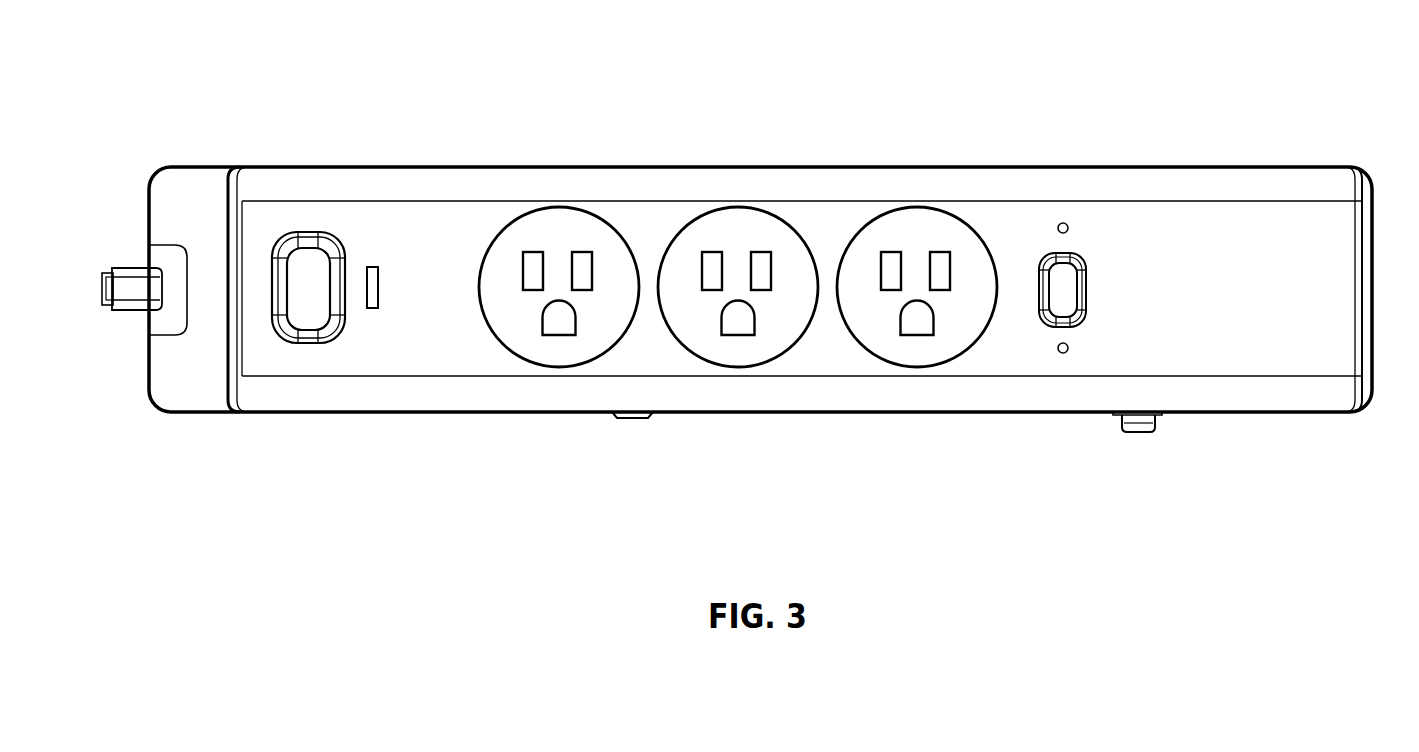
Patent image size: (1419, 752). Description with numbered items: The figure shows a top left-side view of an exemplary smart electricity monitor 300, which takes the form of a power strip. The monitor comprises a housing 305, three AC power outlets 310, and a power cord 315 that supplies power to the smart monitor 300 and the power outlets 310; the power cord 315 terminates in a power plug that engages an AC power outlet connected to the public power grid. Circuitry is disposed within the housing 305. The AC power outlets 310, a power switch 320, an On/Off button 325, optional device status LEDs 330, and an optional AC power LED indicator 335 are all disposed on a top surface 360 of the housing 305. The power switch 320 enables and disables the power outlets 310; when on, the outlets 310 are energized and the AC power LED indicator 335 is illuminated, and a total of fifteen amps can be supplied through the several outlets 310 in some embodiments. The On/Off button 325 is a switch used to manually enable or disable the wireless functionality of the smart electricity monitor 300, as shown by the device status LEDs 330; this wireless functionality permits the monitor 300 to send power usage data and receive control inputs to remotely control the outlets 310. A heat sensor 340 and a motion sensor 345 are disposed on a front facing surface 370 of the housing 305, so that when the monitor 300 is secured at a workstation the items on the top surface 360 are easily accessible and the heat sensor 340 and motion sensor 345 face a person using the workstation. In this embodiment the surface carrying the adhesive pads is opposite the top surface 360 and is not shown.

The smart electricity monitor 300 is at (1288, 98).
The housing 305 is at (212, 392).
The AC power outlets 310 is at (570, 208).
The power cord 315 is at (128, 265).
The power switch 320 is at (310, 232).
The On/Off button 325 is at (1064, 253).
The device status LEDs 330 is at (1063, 222).
The AC power LED indicator 335 is at (372, 265).
The heat sensor 340 is at (632, 418).
The motion sensor 345 is at (1132, 432).
The top surface 360 is at (1262, 235).
The front facing surface 370 is at (423, 413).